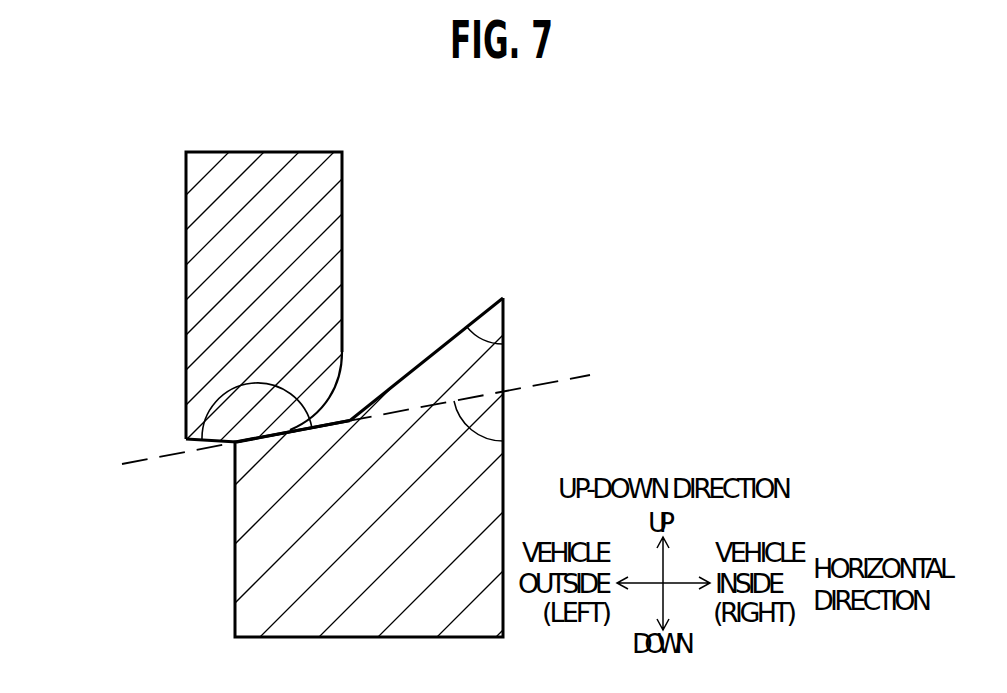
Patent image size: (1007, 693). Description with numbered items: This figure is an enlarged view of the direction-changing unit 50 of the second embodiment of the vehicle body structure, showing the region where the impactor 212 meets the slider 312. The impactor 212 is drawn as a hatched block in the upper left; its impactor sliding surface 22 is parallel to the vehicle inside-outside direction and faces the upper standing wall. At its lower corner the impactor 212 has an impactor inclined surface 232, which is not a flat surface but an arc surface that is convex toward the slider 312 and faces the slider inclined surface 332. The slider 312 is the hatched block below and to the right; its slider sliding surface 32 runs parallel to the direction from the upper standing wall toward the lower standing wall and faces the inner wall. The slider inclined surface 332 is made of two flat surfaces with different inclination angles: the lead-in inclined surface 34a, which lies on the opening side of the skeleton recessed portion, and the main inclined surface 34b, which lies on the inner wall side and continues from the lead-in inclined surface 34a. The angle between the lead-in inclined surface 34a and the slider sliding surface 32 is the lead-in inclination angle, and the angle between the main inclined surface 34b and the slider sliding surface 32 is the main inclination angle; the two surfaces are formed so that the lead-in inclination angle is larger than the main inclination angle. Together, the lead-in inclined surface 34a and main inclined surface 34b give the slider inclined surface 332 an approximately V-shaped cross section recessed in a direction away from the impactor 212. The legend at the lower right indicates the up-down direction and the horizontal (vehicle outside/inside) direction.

The impactor sliding surface 22 is at (233, 283).
The impactor 212 is at (213, 253).
The impactor inclined surface 232 is at (345, 384).
The direction-changing unit 50 is at (362, 343).
The slider inclined surface 332 is at (362, 358).
The lead-in inclined surface 34a is at (203, 441).
The main inclined surface 34b is at (443, 346).
The slider sliding surface 32 is at (389, 451).
The slider 312 is at (260, 568).